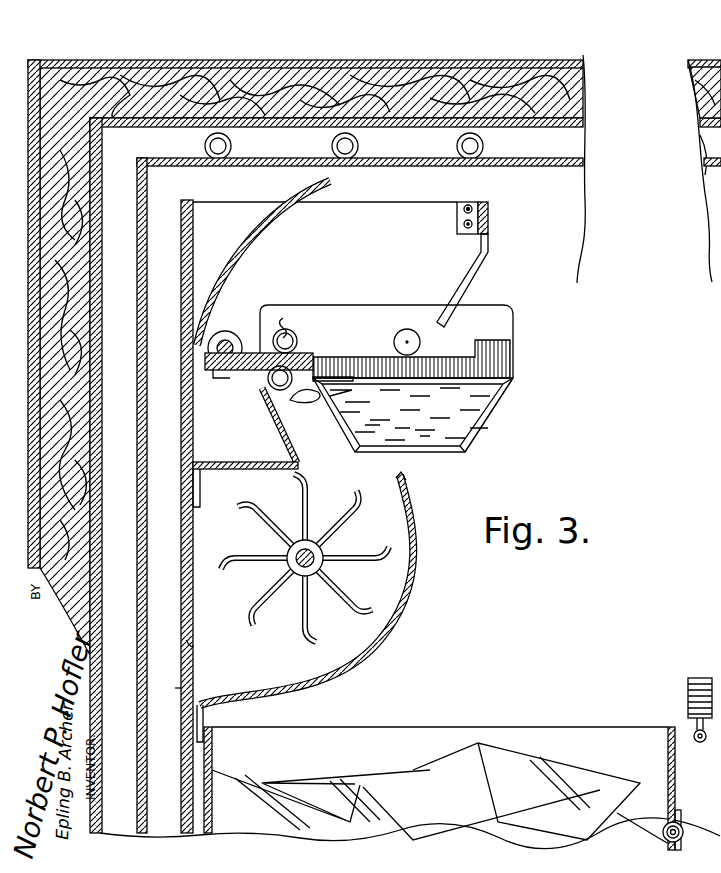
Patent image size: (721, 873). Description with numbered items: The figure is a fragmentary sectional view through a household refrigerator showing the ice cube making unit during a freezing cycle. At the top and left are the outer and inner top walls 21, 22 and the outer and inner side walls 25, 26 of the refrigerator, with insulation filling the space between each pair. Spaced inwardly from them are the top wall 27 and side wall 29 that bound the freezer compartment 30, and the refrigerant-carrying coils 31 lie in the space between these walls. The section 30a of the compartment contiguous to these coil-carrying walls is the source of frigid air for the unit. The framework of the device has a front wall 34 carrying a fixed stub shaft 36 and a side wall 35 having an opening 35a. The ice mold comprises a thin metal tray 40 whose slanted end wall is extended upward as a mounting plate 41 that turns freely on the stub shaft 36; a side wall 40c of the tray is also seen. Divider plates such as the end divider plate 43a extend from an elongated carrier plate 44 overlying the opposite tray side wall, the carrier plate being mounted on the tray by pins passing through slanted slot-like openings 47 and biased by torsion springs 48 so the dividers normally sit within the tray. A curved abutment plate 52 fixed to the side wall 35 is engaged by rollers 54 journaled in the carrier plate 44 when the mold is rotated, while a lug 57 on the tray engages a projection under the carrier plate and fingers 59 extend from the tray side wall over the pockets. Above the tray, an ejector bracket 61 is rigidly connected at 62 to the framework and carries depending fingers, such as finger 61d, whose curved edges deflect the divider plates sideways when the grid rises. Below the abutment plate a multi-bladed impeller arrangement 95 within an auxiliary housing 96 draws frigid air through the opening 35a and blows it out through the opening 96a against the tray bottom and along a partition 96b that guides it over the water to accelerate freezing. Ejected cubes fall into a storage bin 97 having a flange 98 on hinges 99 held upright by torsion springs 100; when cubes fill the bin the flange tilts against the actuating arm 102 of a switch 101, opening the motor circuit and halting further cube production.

The outer top wall 21 is at (572, 63).
The inner top wall 22 is at (580, 124).
The outer side wall 25 is at (40, 386).
The inner side wall 26 is at (102, 436).
The top wall 27 is at (560, 158).
The side wall 29 is at (137, 414).
The freezer compartment 30 is at (532, 638).
The section of the freezer compartment 30a is at (176, 694).
The refrigerant-carrying coils 31 is at (455, 146).
The front wall 34 is at (385, 204).
The side wall 35 is at (182, 318).
The opening 35a is at (186, 640).
The stub shaft 36 is at (421, 343).
The tray 40 is at (458, 452).
The side wall 40c is at (496, 418).
The mounting plate 41 is at (406, 308).
The divider plate 43a is at (495, 358).
The carrier plate 44 is at (248, 370).
The slanted slot-like opening 47 is at (295, 333).
The torsion spring 48 is at (284, 318).
The abutment plate 52 is at (238, 250).
The roller 54 is at (228, 340).
The lug or arm 57 is at (305, 406).
The finger 59 is at (340, 375).
The bracket 61 is at (490, 219).
The finger 61d is at (470, 278).
The connection 62 is at (460, 208).
The impeller arrangement 95 is at (270, 626).
The auxiliary housing 96 is at (326, 676).
The opening 96a is at (398, 470).
The partition 96b is at (266, 410).
The storage bin 97 is at (471, 726).
The flange 98 is at (668, 738).
The hinge 99 is at (663, 828).
The torsion spring 100 is at (681, 818).
The switch 101 is at (688, 685).
The actuating arm 102 is at (694, 736).